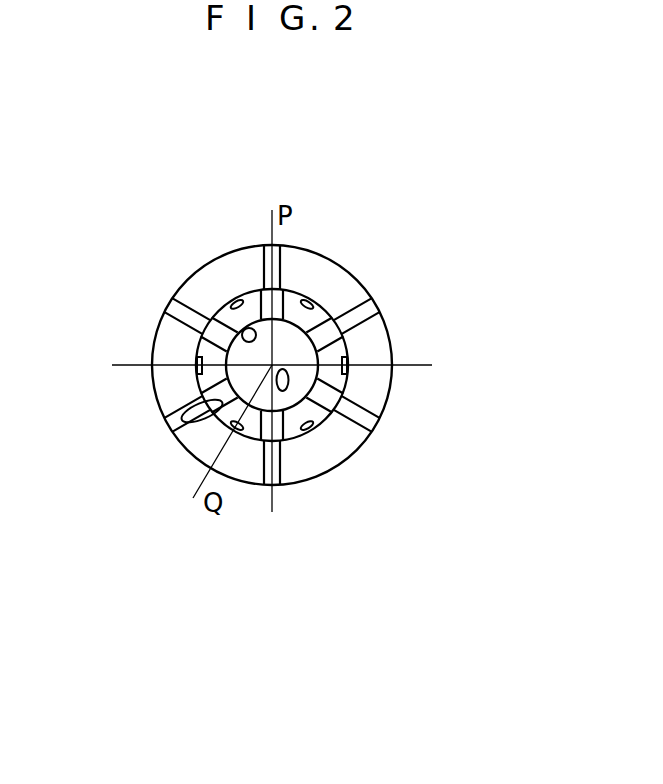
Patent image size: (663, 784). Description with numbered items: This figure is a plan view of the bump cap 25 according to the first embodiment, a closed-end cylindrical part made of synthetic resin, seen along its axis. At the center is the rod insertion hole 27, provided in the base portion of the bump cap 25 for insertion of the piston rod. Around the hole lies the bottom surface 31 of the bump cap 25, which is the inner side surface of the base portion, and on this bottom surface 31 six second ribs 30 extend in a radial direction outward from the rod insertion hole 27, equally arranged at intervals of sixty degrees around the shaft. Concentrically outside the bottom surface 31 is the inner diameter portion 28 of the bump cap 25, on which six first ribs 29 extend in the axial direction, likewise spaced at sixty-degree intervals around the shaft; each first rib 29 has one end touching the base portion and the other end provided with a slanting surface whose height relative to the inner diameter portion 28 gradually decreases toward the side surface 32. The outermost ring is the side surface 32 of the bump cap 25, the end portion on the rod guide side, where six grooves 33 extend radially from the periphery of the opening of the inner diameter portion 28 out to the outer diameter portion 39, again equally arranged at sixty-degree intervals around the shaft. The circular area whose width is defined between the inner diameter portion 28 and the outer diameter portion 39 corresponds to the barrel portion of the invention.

The bump cap 25 is at (359, 218).
The rod insertion hole 27 is at (247, 327).
The inner diameter portion 28 is at (177, 432).
The first ribs 29 is at (317, 297).
The second ribs 30 is at (280, 297).
The bottom surface 31 is at (253, 297).
The side surface 32 is at (368, 387).
The grooves 33 is at (172, 308).
The outer diameter portion 39 is at (150, 352).